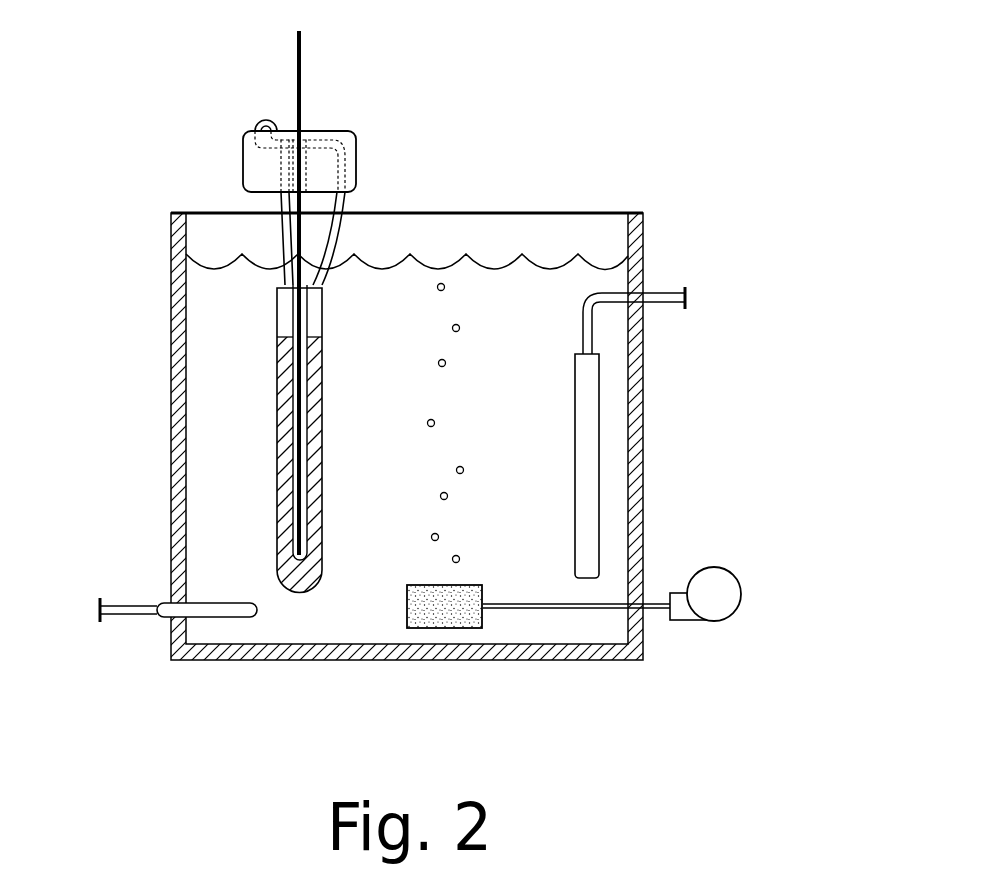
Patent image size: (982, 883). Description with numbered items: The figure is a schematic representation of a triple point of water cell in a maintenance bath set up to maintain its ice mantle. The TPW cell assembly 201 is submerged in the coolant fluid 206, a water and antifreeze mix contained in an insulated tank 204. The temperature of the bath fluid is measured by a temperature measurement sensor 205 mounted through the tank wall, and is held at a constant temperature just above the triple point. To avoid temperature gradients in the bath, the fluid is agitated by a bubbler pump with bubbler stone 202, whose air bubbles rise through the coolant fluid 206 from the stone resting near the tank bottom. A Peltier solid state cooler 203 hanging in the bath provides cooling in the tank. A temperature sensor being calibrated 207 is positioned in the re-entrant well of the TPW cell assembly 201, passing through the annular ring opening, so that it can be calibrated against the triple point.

The TPW cell assembly 201 is at (250, 97).
The bubbler pump with bubbler stone 202 is at (720, 580).
The Peltier solid state cooler 203 is at (587, 417).
The insulated tank 204 is at (645, 518).
The temperature measurement 205 is at (160, 602).
The coolant fluid 206 is at (343, 618).
The temperature sensor being calibrated 207 is at (302, 65).